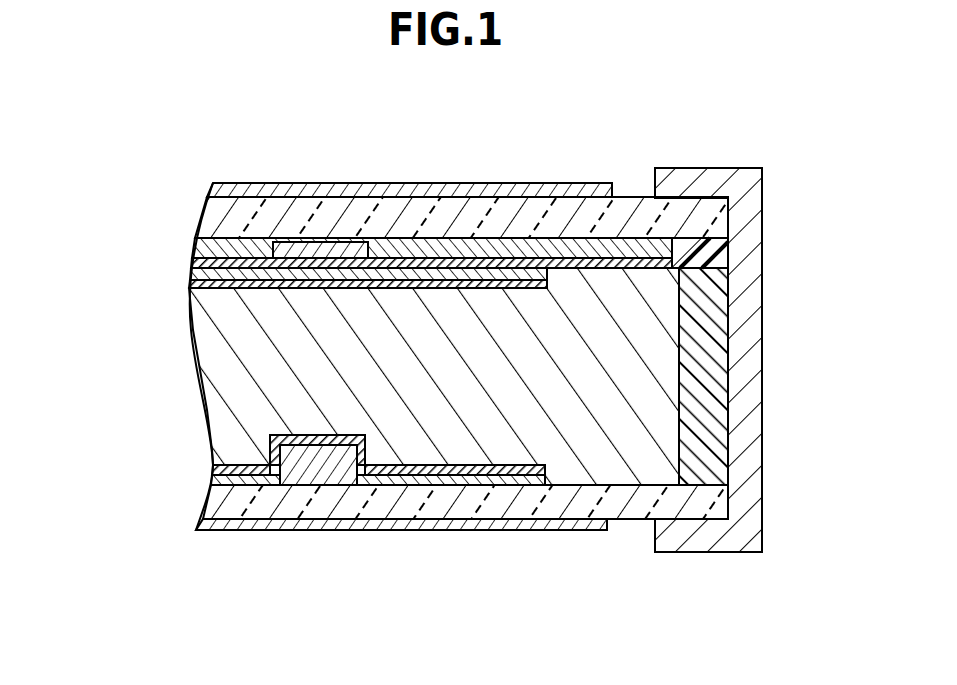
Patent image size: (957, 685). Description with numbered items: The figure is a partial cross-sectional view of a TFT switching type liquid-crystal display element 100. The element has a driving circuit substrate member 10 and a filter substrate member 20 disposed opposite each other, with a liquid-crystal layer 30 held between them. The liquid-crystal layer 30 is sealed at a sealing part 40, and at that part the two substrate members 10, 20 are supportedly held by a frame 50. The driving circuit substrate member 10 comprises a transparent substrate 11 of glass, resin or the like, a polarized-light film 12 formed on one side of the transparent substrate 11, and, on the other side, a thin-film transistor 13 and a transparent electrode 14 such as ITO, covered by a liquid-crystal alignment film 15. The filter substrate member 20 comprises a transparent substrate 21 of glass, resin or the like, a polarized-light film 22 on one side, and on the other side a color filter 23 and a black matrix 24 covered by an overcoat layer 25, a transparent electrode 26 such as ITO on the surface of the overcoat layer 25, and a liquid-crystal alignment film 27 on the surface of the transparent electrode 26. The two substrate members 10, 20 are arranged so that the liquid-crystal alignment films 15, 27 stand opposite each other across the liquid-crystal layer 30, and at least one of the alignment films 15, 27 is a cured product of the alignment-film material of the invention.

The liquid-crystal display element 100 is at (818, 117).
The driving circuit substrate member 10 is at (118, 420).
The transparent substrate 11 is at (203, 506).
The polarized-light film 12 is at (196, 529).
The thin-film transistor 13 is at (270, 447).
The transparent electrode 14 is at (212, 481).
The liquid-crystal alignment film 15 is at (213, 468).
The filter substrate member 20 is at (118, 134).
The transparent substrate 21 is at (208, 216).
The polarized-light film 22 is at (213, 184).
The color filter 23 is at (195, 244).
The black matrix 24 is at (317, 242).
The overcoat layer 25 is at (191, 262).
The transparent electrode 26 is at (190, 273).
The liquid-crystal alignment film 27 is at (189, 286).
The liquid-crystal layer 30 is at (207, 362).
The sealing part 40 is at (716, 377).
The frame 50 is at (757, 229).